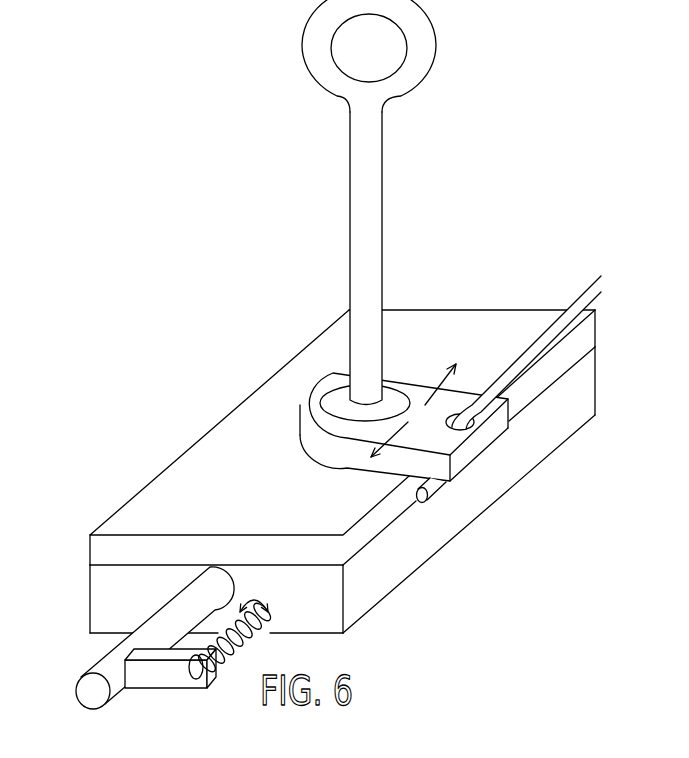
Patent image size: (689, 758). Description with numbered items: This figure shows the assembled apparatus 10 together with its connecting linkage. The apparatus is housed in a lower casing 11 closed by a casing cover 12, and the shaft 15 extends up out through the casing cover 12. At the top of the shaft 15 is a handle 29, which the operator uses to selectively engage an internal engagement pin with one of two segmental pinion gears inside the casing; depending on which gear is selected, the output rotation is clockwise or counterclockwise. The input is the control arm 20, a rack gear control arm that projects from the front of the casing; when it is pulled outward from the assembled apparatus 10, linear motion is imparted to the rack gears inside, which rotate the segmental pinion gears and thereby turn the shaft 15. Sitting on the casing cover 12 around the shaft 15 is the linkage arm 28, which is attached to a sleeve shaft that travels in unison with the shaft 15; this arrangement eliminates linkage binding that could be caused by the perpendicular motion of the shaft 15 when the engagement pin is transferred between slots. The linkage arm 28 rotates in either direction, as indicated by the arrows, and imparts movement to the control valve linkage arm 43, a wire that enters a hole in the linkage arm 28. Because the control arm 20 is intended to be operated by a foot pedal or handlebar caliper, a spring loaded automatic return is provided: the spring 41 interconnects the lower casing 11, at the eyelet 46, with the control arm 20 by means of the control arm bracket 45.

The assembled apparatus 10 is at (342, 456).
The lower casing 11 is at (453, 515).
The casing cover 12 is at (489, 325).
The shaft 15 is at (358, 260).
The control arm 20 is at (103, 661).
The linkage arm 28 is at (406, 388).
The handle 29 is at (427, 30).
The spring 41 is at (247, 650).
The control valve linkage arm 43 is at (566, 316).
The control arm bracket 45 is at (167, 677).
The eyelet 46 is at (266, 606).